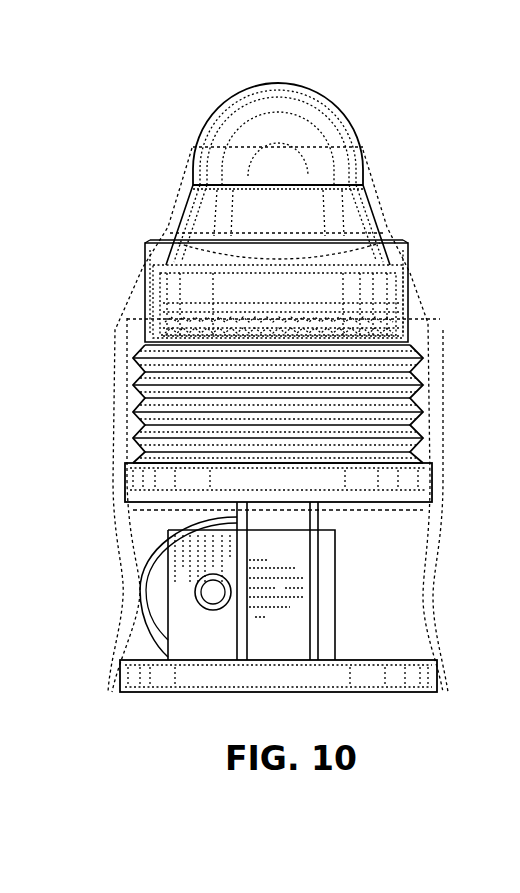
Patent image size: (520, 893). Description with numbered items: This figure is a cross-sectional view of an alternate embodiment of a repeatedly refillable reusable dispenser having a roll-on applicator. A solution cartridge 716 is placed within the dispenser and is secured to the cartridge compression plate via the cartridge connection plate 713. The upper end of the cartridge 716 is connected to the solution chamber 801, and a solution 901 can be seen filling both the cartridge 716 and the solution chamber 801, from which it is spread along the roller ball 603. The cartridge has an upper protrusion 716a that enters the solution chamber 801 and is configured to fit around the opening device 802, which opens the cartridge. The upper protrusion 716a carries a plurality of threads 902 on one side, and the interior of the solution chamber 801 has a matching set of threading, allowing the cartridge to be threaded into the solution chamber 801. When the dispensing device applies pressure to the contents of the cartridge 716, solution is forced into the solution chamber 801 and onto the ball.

The roller ball 603 is at (330, 102).
The solution 901 is at (385, 227).
The solution chamber 801 is at (410, 280).
The upper protrusion 716a is at (440, 320).
The opening device 802 is at (430, 375).
The solution cartridge 716 is at (423, 403).
The cartridge connection plate 713 is at (428, 470).
The threads 902 is at (140, 300).